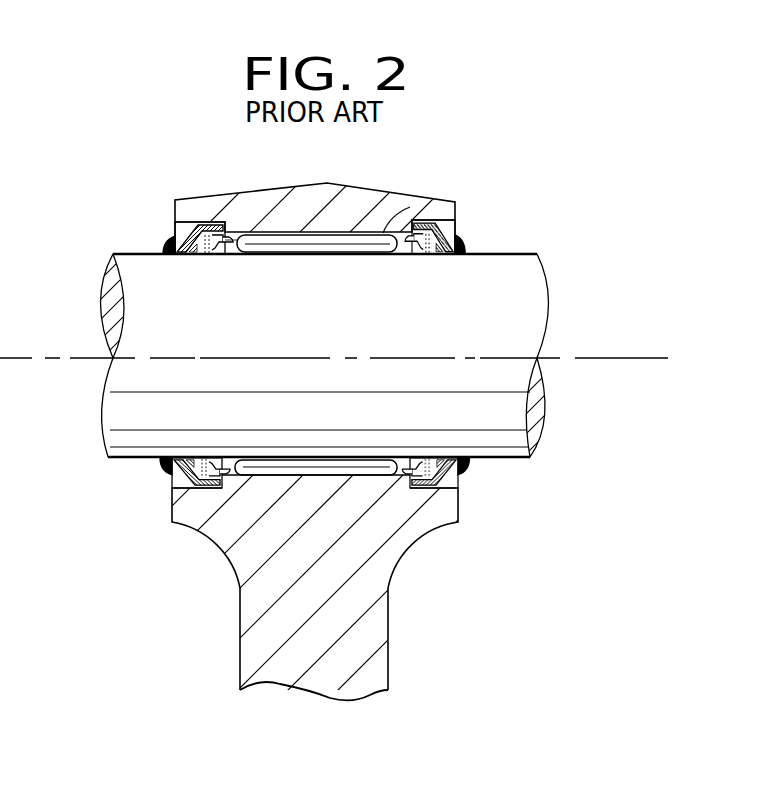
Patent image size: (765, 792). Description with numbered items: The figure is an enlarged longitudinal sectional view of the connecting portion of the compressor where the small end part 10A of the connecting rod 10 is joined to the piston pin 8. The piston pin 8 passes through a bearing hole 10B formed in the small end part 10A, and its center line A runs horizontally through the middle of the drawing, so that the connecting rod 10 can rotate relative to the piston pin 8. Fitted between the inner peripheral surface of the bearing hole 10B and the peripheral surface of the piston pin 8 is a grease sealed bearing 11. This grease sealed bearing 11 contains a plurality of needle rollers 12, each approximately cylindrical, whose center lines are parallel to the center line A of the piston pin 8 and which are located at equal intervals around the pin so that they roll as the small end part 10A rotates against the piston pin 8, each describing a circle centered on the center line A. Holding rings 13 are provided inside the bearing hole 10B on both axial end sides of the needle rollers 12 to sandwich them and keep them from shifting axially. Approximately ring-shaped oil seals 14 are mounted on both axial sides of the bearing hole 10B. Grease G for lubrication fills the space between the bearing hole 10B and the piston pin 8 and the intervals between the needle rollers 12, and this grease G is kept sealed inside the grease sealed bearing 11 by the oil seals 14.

The piston pin 8 is at (142, 273).
The connecting rod 10 is at (388, 646).
The small end part 10A is at (366, 190).
The bearing hole 10B is at (300, 245).
The grease sealed bearing 11 is at (468, 238).
The needle rollers 12 is at (440, 218).
The holding rings 13 is at (212, 232).
The oil seals 14 is at (168, 242).
The grease G is at (197, 230).
The center line A is at (578, 358).